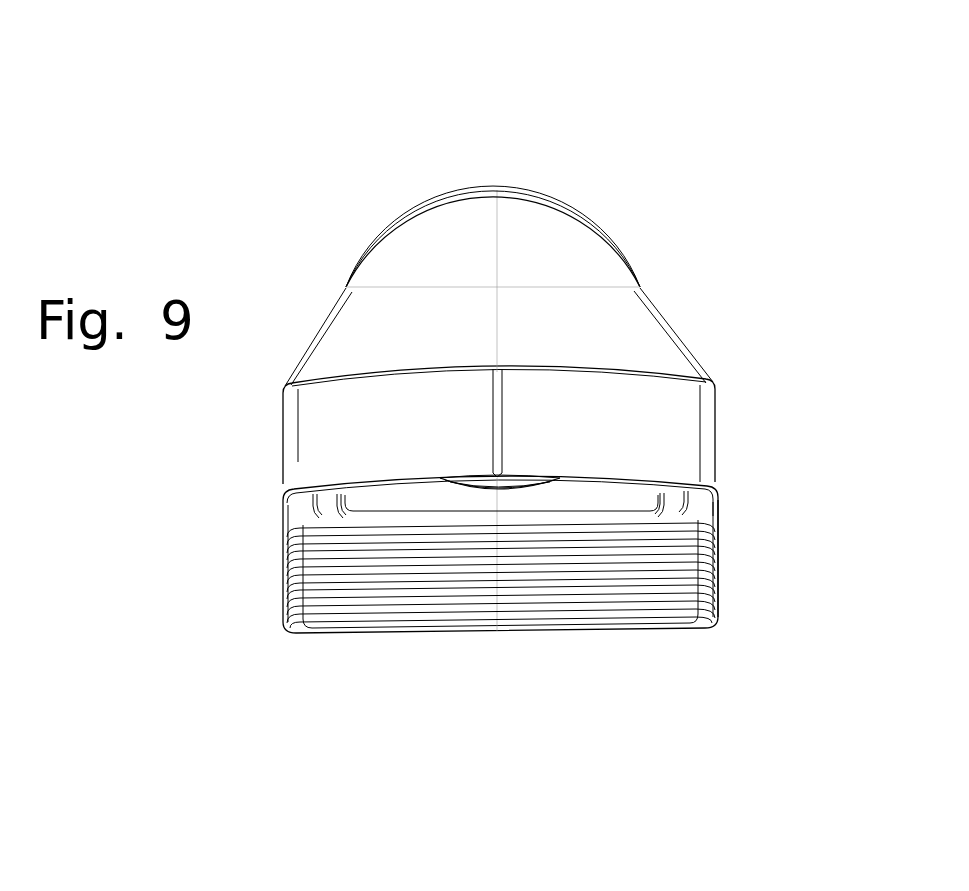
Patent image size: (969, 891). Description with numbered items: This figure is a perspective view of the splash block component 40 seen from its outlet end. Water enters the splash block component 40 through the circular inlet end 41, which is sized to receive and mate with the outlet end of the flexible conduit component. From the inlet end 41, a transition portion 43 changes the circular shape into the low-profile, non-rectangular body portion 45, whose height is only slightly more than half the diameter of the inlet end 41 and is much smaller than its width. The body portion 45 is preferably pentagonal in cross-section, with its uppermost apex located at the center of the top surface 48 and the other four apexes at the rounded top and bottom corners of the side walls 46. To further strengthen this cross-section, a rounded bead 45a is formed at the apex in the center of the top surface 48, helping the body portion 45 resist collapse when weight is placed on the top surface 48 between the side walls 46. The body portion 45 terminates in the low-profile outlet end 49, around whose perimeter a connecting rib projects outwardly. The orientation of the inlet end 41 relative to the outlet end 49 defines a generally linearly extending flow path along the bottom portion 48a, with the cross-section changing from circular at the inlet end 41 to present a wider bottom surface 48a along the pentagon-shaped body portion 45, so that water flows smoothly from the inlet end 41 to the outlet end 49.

The splash block component 40 is at (338, 146).
The inlet end 41 is at (520, 190).
The transition portion 43 is at (629, 325).
The body portion 45 is at (670, 408).
The rounded bead 45a is at (503, 422).
The side walls 46 is at (717, 476).
The top surface 48 is at (352, 424).
The bottom portion 48a is at (618, 605).
The outlet end 49 is at (718, 581).